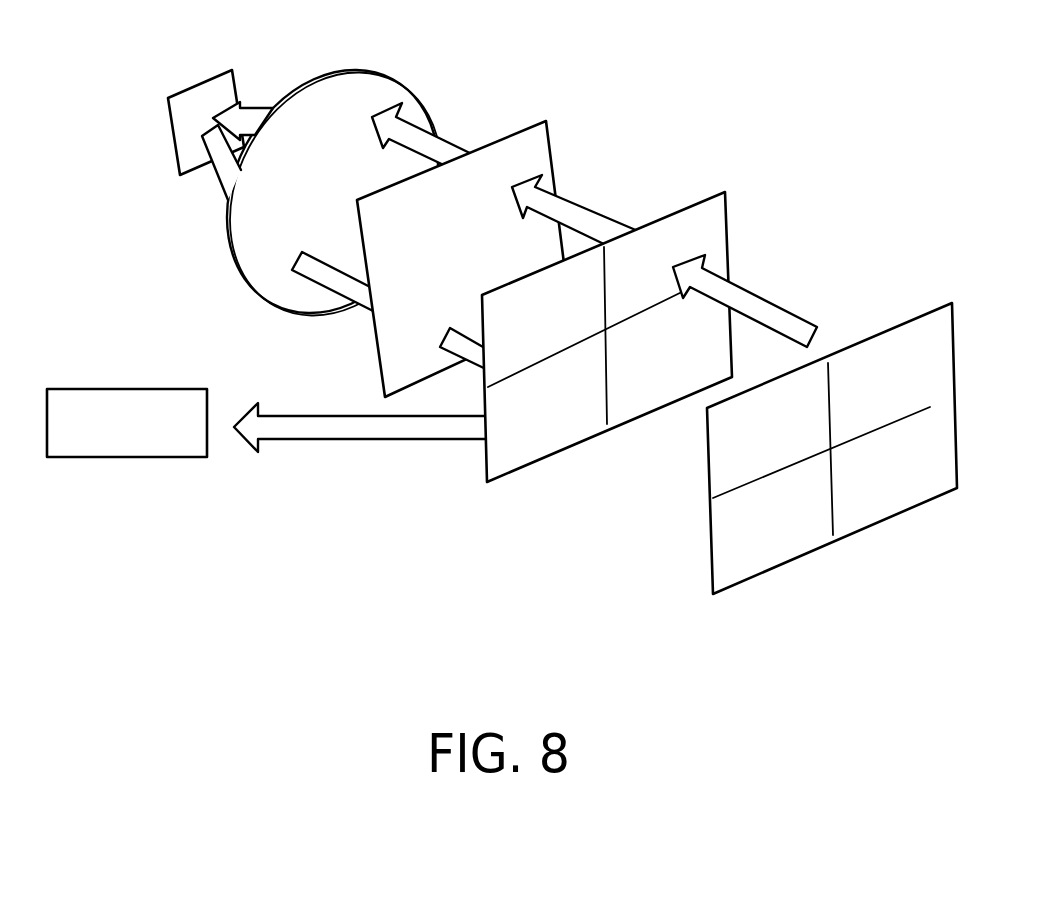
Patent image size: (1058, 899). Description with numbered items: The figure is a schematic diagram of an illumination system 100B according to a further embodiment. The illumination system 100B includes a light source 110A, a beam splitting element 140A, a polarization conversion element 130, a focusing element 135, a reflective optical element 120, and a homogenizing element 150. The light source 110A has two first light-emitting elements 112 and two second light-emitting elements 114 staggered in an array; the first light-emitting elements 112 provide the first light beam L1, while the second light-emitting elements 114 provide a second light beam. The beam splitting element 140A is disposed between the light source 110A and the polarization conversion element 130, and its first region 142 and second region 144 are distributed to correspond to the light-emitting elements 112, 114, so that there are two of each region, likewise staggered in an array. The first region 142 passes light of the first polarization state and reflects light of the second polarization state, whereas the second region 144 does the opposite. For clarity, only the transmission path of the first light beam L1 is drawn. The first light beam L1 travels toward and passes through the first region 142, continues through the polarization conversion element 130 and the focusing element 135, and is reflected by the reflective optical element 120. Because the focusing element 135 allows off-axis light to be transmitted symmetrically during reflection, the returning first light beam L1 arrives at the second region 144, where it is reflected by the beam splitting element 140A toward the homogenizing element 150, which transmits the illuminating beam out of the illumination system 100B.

The illumination system 100B is at (502, 346).
The light source 110A is at (793, 446).
The first light-emitting element 112 is at (910, 355).
The second light-emitting element 114 is at (738, 462).
The reflective optical element 120 is at (207, 80).
The polarization conversion element 130 is at (512, 145).
The focusing element 135 is at (318, 97).
The beam splitting element 140A is at (639, 332).
The first region 142 is at (713, 233).
The second region 144 is at (540, 338).
The homogenizing element 150 is at (125, 398).
The first light beam L1 is at (763, 305).